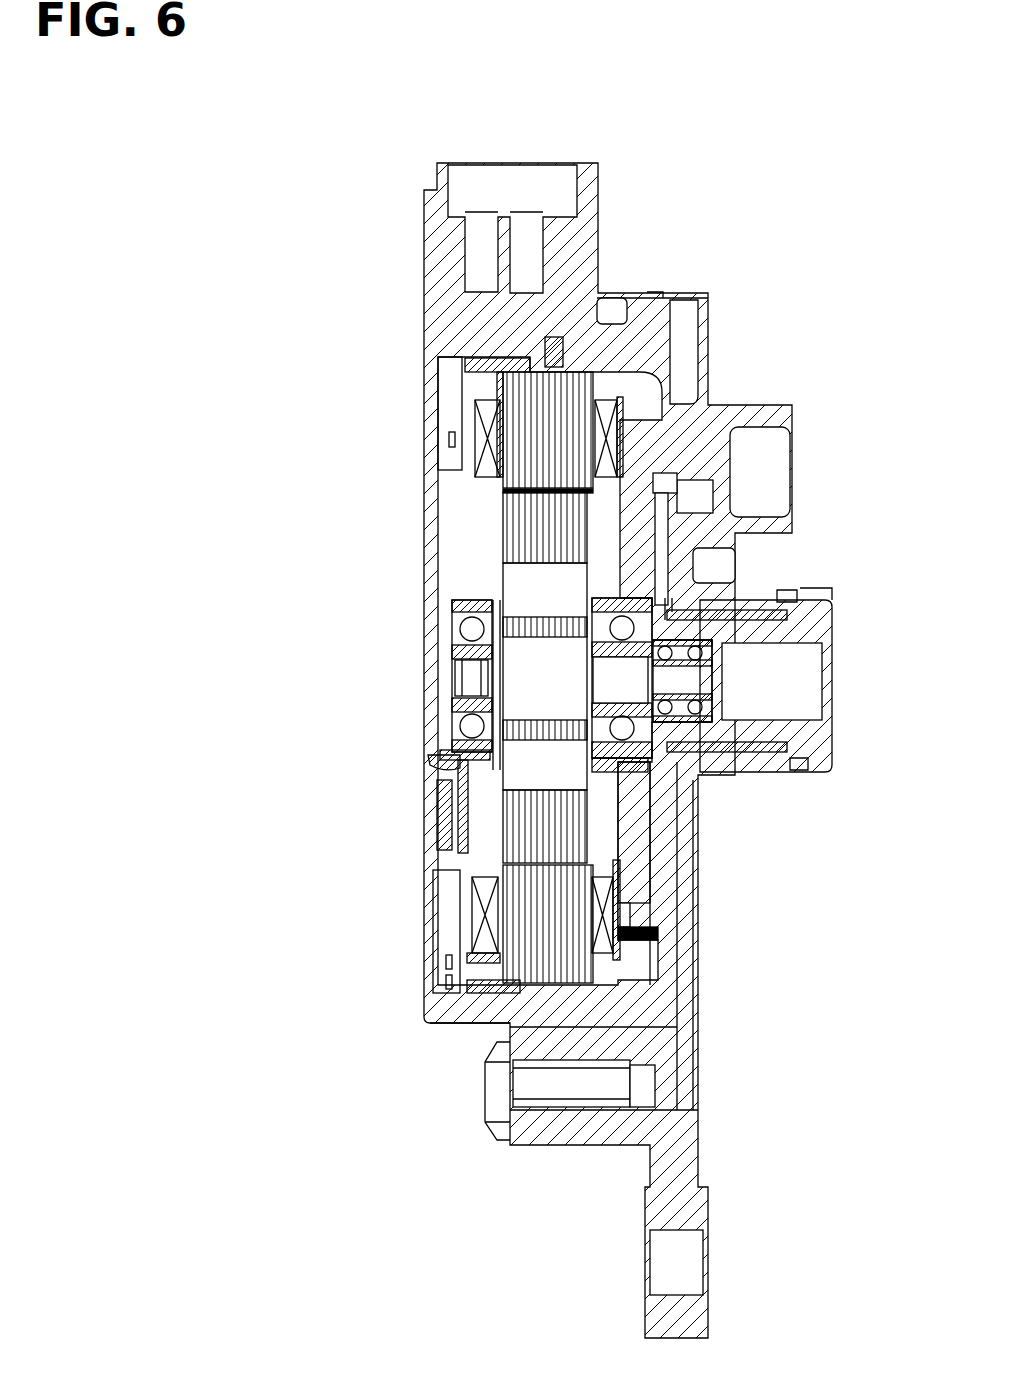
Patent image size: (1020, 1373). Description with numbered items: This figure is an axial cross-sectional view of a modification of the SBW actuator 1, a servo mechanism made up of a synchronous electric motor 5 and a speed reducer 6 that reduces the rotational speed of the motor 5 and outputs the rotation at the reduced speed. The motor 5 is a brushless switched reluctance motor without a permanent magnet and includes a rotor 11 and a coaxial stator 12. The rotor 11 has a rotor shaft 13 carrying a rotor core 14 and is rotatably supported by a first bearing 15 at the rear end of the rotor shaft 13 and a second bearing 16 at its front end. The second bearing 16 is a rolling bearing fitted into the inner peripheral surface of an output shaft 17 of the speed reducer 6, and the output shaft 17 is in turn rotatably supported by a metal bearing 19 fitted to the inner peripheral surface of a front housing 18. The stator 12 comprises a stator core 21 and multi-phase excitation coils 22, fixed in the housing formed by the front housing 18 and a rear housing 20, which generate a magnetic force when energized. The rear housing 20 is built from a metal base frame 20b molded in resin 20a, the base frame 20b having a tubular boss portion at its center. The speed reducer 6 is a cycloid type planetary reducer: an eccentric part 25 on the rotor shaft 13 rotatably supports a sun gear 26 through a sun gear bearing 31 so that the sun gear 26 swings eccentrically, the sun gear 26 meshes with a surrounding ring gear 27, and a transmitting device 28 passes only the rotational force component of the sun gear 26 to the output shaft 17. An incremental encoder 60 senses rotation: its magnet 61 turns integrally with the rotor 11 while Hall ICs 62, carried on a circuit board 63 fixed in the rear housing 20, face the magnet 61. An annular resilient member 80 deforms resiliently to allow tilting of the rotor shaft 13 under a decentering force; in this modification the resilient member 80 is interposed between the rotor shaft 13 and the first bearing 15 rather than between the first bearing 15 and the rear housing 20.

The SBW actuator 1 is at (343, 274).
The synchronous electric motor 5 is at (415, 675).
The speed reducer 6 is at (702, 876).
The rotor 11 is at (426, 671).
The stator 12 is at (439, 675).
The rotor shaft 13 is at (470, 587).
The rotor core 14 is at (515, 523).
The first bearing 15 is at (470, 634).
The second bearing 16 is at (700, 585).
The output shaft 17 is at (697, 778).
The front housing 18 is at (657, 1032).
The metal bearing 19 is at (745, 612).
The rear housing 20 is at (523, 750).
The resin 20a is at (427, 1021).
The metal base frame 20b is at (473, 1027).
The stator core 21 is at (530, 420).
The excitation coils 22 is at (455, 440).
The eccentric part 25 is at (688, 808).
The sun gear 26 is at (693, 893).
The ring gear 27 is at (690, 960).
The transmitting device 28 is at (690, 853).
The sun gear bearing 31 is at (672, 640).
The encoder 60 is at (371, 807).
The magnet 61 is at (478, 833).
The Hall ICs 62 is at (478, 815).
The circuit board 63 is at (440, 765).
The annular resilient member 80 is at (432, 703).